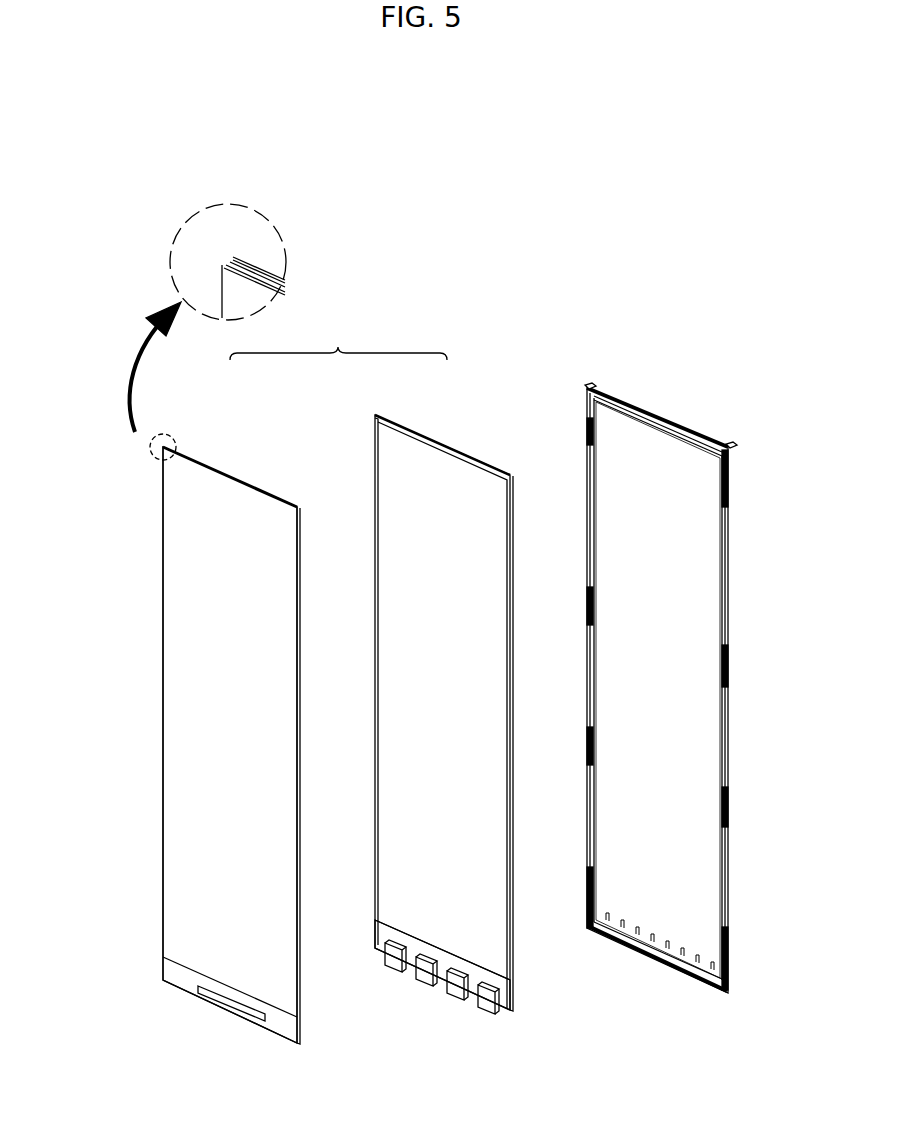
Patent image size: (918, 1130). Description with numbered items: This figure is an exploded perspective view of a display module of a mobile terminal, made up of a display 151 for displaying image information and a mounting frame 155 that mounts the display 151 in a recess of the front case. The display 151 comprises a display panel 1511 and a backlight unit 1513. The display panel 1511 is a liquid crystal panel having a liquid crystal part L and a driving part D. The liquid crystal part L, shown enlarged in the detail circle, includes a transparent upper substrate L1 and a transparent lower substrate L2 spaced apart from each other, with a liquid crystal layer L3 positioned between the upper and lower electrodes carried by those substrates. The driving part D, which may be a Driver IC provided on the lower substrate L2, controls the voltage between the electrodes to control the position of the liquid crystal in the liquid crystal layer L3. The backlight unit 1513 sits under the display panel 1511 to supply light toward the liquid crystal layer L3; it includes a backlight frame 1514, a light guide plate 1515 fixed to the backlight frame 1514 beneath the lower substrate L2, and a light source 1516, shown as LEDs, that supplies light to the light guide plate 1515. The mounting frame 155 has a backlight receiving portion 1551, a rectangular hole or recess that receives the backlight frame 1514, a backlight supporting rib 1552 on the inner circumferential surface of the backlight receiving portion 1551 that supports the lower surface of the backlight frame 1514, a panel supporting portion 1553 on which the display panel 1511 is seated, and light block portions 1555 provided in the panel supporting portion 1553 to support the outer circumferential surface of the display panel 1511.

The liquid crystal part L is at (210, 783).
The upper substrate L1 is at (226, 265).
The lower substrate L2 is at (232, 258).
The liquid crystal layer L3 is at (230, 262).
The driving part D is at (228, 1003).
The display 151 is at (338, 344).
The display panel 1511 is at (236, 466).
The backlight unit 1513 is at (452, 430).
The backlight frame 1514 is at (513, 987).
The light guide plate 1515 is at (398, 886).
The light source 1516 is at (427, 975).
The mounting frame 155 is at (670, 404).
The backlight receiving portion 1551 is at (680, 706).
The backlight supporting rib 1552 is at (640, 950).
The panel supporting portion 1553 is at (585, 425).
The light block portion 1555 is at (730, 462).